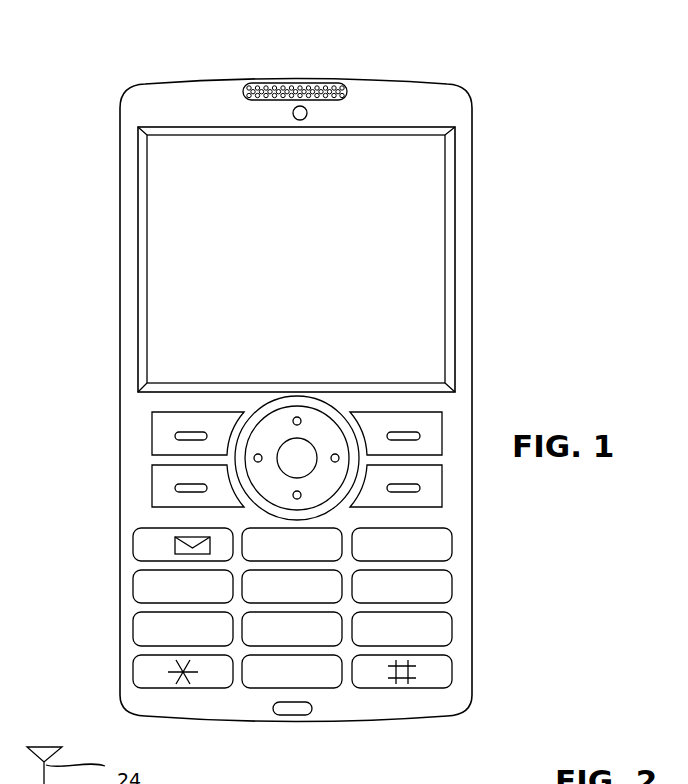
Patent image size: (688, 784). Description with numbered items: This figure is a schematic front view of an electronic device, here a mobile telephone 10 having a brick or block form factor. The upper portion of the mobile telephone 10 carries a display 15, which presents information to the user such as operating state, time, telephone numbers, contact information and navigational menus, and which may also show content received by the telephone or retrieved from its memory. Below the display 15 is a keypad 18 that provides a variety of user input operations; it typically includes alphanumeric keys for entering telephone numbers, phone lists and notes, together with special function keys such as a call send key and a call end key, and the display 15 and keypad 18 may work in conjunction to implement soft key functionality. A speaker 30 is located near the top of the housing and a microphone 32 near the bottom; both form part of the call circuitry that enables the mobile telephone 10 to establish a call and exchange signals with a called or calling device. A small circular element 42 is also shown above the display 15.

The mobile telephone 10 is at (92, 146).
The display 15 is at (163, 246).
The keypad 18 is at (206, 697).
The speaker 30 is at (296, 83).
The microphone 32 is at (300, 715).
The camera 42 is at (308, 113).